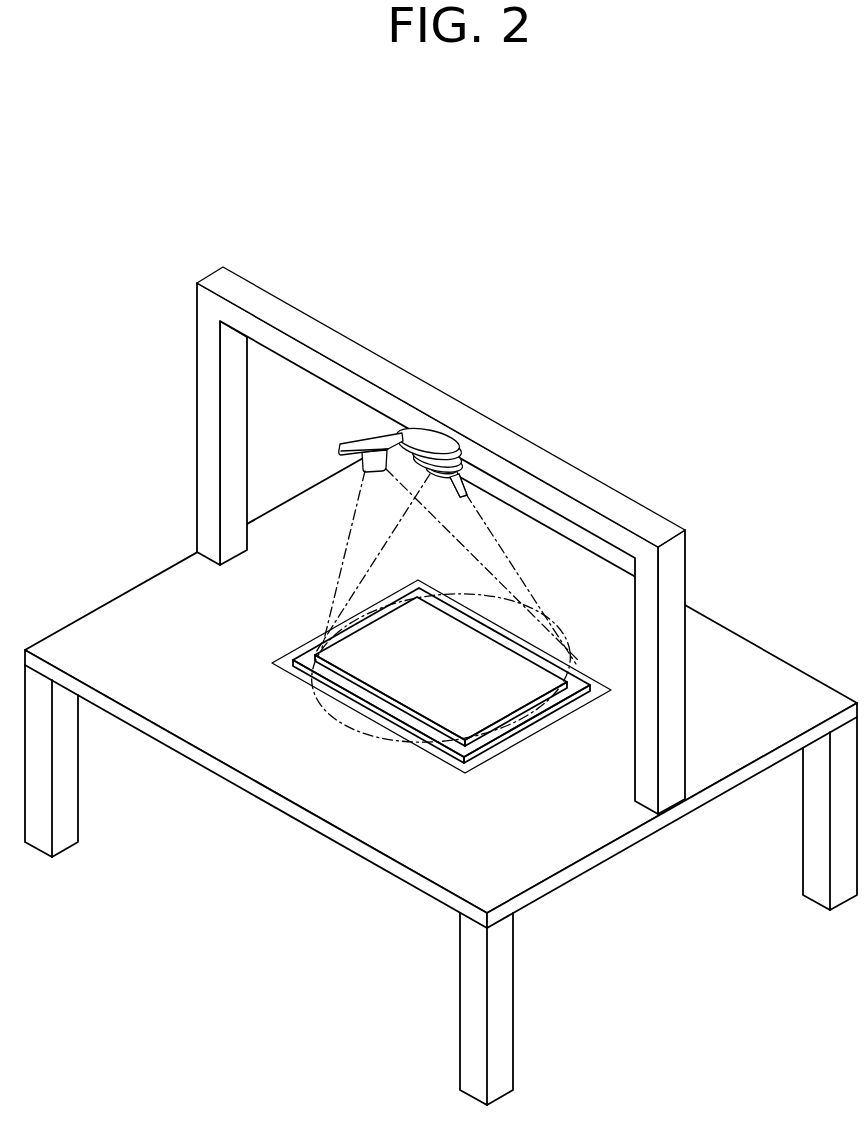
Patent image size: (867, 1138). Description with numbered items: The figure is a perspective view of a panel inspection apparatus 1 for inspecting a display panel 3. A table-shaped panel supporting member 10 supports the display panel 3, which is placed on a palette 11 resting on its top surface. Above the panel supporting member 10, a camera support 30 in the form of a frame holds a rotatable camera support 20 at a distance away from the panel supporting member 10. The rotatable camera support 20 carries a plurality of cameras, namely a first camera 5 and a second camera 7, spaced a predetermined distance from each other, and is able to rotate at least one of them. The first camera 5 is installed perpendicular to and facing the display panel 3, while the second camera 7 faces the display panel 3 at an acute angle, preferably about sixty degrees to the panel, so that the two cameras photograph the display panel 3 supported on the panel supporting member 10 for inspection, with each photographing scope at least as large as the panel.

The panel inspection apparatus 1 is at (378, 125).
The display panel 3 is at (403, 695).
The first camera 5 is at (470, 496).
The second camera 7 is at (393, 435).
The panel supporting member 10 is at (352, 846).
The palette 11 is at (327, 675).
The rotatable camera support 20 is at (375, 421).
The camera support 30 is at (682, 567).